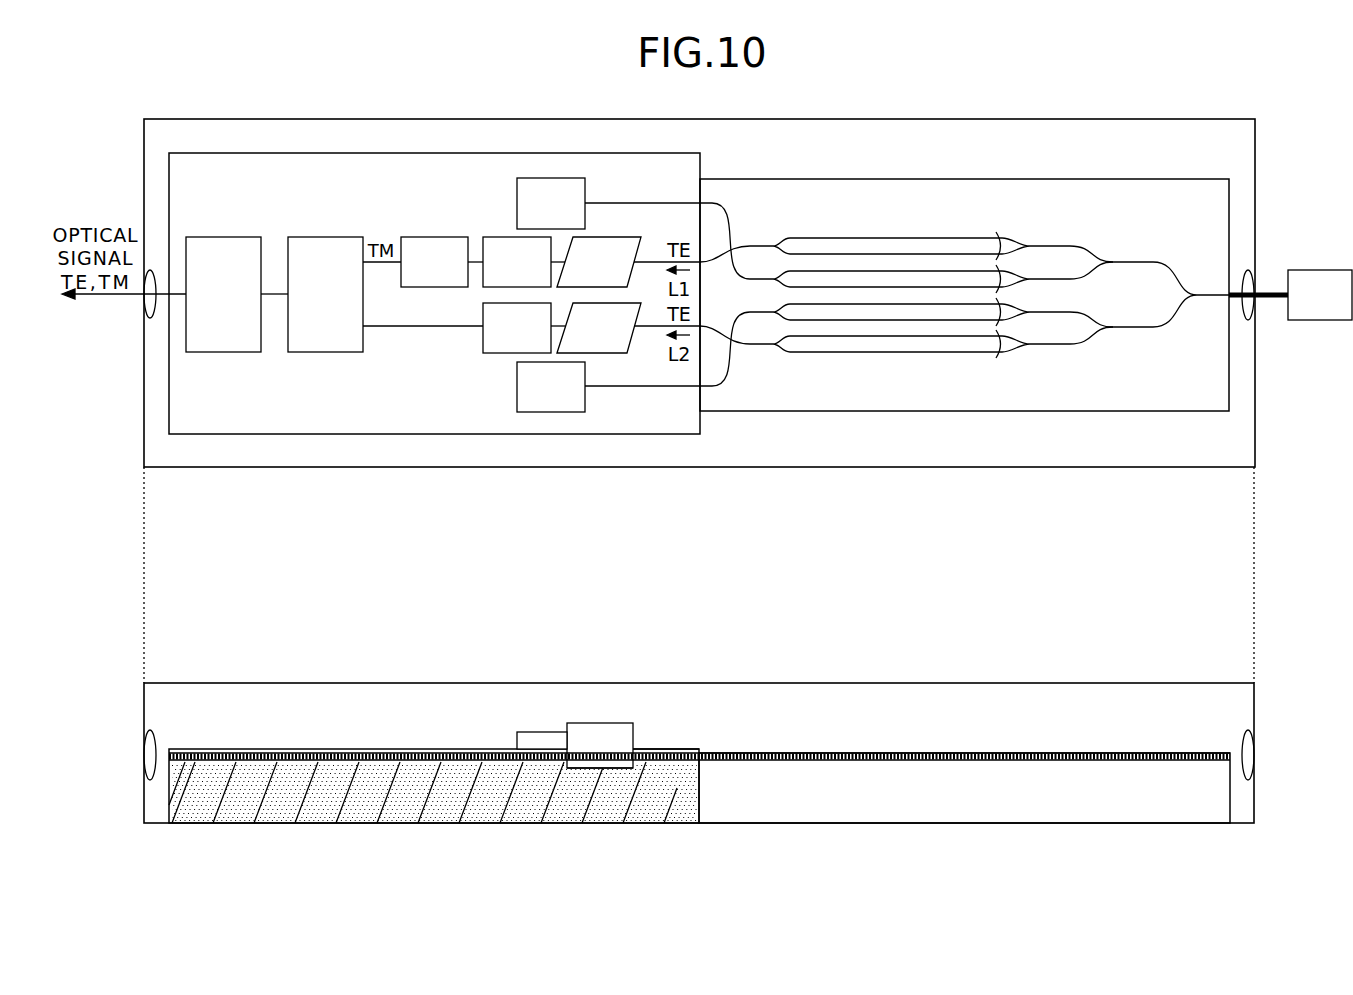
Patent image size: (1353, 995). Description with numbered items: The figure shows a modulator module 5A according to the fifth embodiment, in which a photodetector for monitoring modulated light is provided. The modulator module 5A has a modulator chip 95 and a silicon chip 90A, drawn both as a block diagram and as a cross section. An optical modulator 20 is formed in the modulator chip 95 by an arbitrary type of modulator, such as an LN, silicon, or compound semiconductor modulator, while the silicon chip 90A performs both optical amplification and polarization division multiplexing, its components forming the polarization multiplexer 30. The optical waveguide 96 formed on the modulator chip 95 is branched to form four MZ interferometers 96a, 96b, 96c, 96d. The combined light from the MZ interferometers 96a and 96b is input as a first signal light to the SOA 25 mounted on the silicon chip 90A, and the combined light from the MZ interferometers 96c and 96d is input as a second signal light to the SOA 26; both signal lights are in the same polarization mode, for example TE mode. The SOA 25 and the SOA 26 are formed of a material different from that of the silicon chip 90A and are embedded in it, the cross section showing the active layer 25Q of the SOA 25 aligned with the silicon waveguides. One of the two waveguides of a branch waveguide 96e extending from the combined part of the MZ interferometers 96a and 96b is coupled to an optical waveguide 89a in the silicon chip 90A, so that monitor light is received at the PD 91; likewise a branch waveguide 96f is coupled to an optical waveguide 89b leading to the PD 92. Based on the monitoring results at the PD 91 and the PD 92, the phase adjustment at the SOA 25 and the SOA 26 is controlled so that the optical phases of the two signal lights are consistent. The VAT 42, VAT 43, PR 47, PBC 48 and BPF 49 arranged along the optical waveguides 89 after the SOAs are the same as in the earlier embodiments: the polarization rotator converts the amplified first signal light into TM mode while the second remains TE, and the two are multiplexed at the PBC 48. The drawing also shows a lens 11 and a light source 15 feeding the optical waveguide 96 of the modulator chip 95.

The modulator module 5A is at (1190, 119).
The silicon chip 90A is at (620, 153).
The polarization multiplexer 30 is at (555, 112).
The BPF 49 is at (222, 237).
The PBC 48 is at (326, 237).
The PR 47 is at (434, 237).
The VAT 42 is at (494, 237).
The VAT 43 is at (494, 353).
The SOA 25 is at (600, 237).
The SOA 26 is at (600, 353).
The PD 91 is at (585, 191).
The PD 92 is at (585, 403).
The optical waveguide 89a is at (640, 203).
The optical waveguide 89b is at (640, 386).
The optical waveguides 89 is at (662, 753).
The modulator chip 95 is at (1105, 179).
The optical modulator 20 is at (728, 470).
The optical waveguide 96 is at (740, 232).
The MZ interferometer 96a is at (1010, 256).
The MZ interferometer 96b is at (1010, 289).
The MZ interferometer 96c is at (1010, 321).
The MZ interferometer 96d is at (1010, 353).
The branch waveguide 96e is at (722, 206).
The branch waveguide 96f is at (722, 387).
The lens 11 is at (1256, 308).
The laser diode (LD) 15 is at (1322, 270).
The active layer 25Q is at (600, 769).